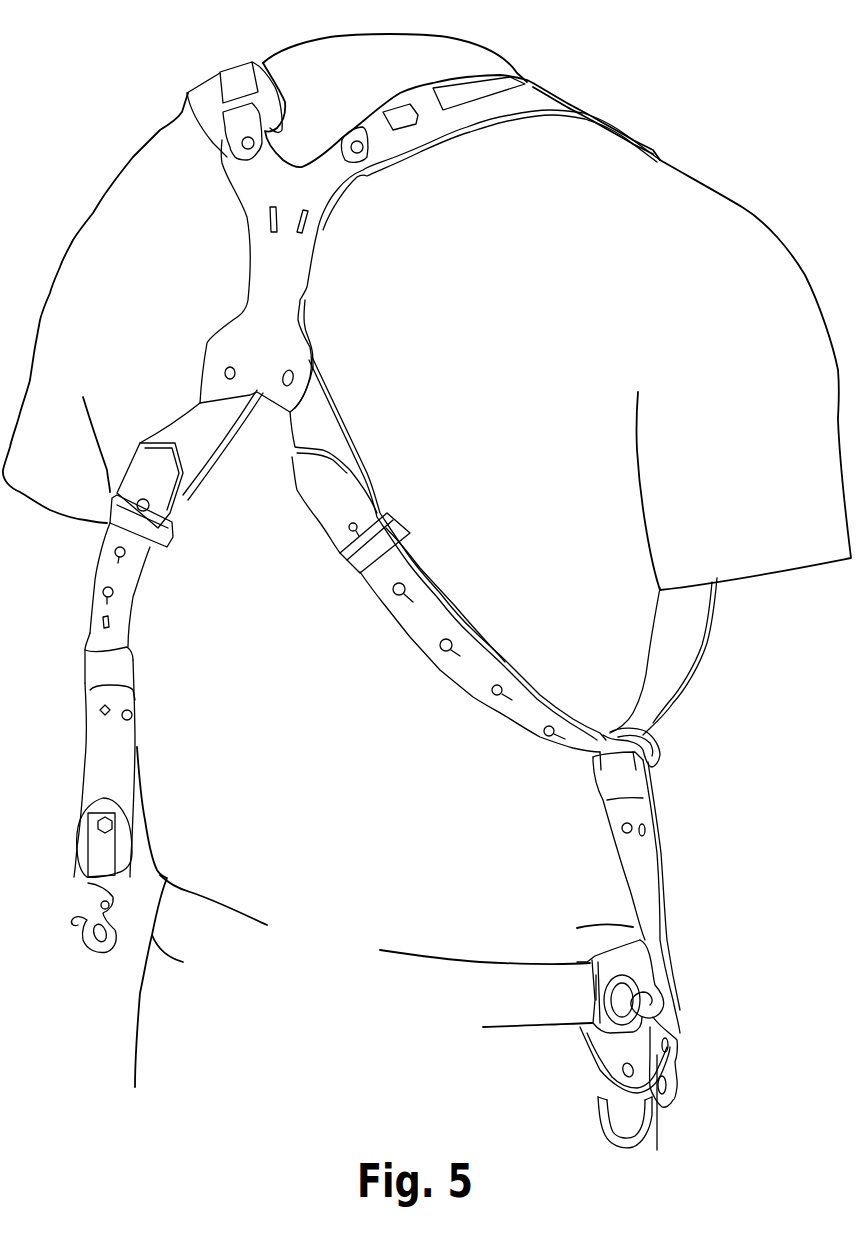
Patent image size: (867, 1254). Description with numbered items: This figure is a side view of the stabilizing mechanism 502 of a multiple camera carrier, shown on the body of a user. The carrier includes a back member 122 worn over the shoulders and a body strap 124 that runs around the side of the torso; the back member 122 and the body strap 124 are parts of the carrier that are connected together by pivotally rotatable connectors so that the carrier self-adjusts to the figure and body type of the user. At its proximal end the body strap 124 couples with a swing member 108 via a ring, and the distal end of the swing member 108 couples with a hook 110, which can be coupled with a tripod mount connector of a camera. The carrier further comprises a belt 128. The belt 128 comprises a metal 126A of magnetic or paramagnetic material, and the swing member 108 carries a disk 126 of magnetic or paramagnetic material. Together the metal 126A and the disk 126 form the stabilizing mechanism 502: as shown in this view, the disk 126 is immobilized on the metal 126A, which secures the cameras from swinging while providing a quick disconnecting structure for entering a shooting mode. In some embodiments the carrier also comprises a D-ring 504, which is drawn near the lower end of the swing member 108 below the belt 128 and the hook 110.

The stabilizing mechanism 502 is at (777, 44).
The back member 122 is at (285, 349).
The body strap 124 is at (717, 670).
The swing member 108 is at (667, 849).
The belt 128 is at (497, 1009).
The disk 126 is at (660, 981).
The metal 126A is at (591, 995).
The D-ring 504 is at (596, 1130).
The hook 110 is at (685, 1074).